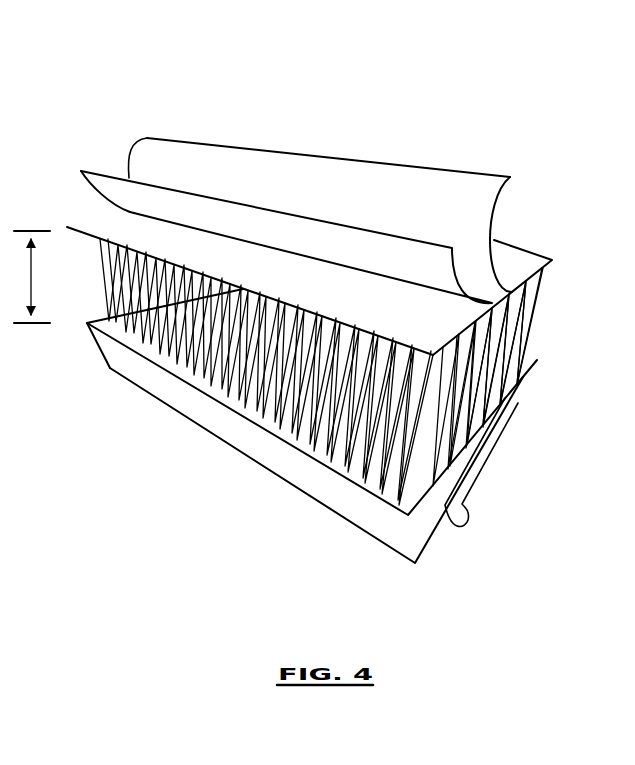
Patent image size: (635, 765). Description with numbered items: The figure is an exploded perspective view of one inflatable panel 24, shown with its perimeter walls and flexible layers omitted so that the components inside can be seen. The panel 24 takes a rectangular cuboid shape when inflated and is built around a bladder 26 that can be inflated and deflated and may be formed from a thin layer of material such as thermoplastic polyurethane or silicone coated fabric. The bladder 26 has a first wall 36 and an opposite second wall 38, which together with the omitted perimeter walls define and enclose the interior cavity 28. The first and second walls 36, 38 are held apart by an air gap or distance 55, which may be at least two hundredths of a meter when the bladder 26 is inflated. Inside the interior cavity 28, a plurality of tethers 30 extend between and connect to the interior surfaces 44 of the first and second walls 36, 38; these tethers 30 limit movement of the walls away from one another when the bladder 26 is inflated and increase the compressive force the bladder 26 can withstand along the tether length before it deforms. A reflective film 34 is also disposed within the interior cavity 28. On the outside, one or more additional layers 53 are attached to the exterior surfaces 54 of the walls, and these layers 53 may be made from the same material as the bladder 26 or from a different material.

The panel 24 is at (376, 101).
The bladder 26 is at (357, 300).
The interior cavity 28 is at (549, 318).
The tethers 30 is at (250, 515).
The reflective film 34 is at (232, 253).
The first wall 36 is at (347, 243).
The second wall 38 is at (240, 426).
The interior surfaces 44 is at (93, 201).
The additional layers 53 is at (427, 178).
The exterior surfaces 54 is at (465, 281).
The distance 55 is at (32, 277).